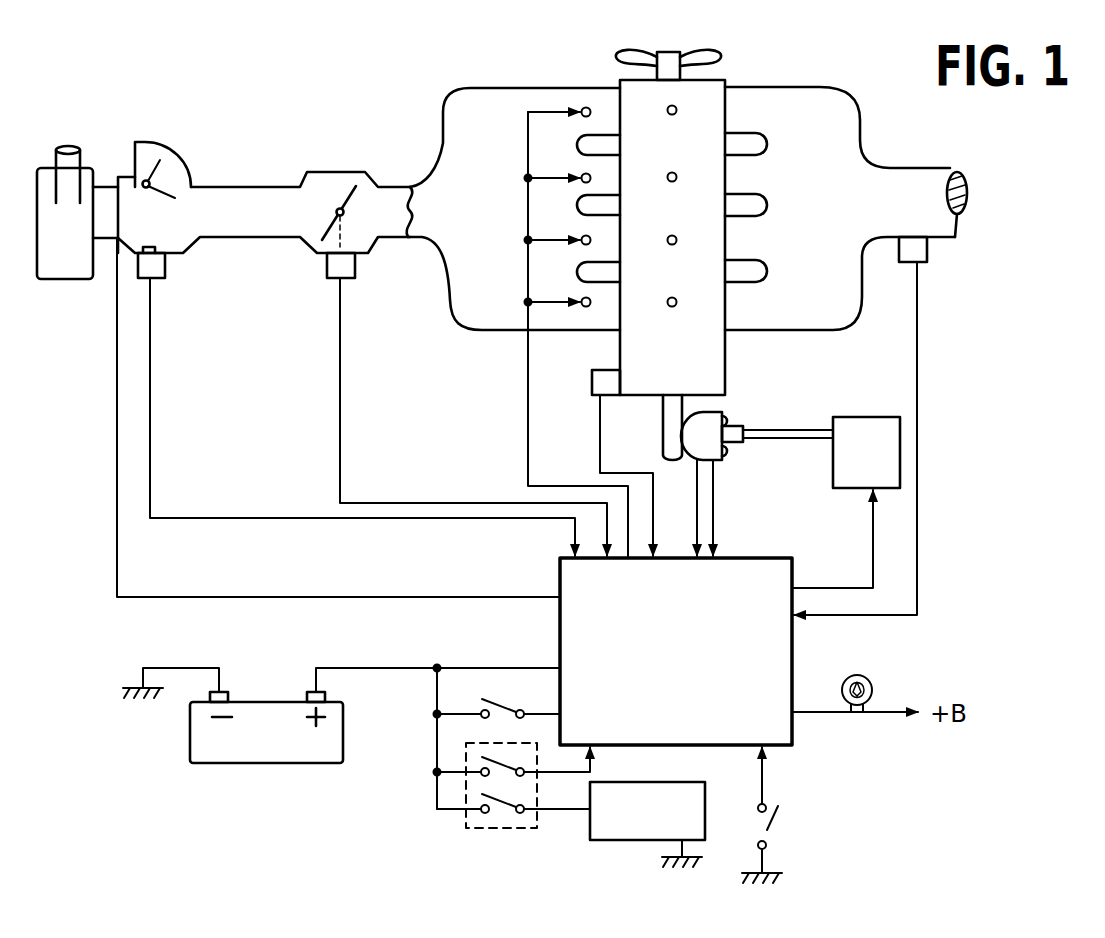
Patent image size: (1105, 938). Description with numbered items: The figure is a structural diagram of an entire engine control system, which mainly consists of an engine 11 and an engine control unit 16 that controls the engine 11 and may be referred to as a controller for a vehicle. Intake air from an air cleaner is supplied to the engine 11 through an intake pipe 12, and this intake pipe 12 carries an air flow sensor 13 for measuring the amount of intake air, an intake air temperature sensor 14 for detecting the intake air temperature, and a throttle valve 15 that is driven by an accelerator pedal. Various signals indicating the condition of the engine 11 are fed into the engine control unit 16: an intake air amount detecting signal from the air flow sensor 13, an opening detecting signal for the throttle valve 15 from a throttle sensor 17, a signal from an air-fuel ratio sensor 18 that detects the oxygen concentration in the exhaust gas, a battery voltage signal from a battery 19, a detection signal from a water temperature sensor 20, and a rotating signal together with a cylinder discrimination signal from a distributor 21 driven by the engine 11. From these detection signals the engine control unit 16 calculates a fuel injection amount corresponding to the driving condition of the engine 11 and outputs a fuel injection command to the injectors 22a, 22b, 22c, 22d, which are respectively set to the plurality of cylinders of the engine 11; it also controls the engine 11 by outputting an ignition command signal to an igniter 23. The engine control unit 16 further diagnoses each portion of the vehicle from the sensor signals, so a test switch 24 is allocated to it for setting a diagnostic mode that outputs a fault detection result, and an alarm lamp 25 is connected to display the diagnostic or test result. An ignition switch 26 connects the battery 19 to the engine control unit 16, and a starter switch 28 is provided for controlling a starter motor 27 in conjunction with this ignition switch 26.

The engine 11 is at (710, 97).
The intake pipe 12 is at (220, 187).
The air flow sensor 13 is at (140, 181).
The intake air temperature sensor 14 is at (165, 262).
The throttle valve 15 is at (340, 186).
The engine control unit 16 is at (795, 727).
The throttle sensor 17 is at (355, 262).
The air-fuel ratio sensor 18 is at (927, 250).
The battery 19 is at (310, 763).
The water temperature sensor 20 is at (592, 380).
The distributor 21 is at (724, 417).
The injector 22a is at (585, 107).
The injector 22b is at (584, 175).
The injector 22c is at (583, 243).
The injector 22d is at (585, 307).
The igniter 23 is at (873, 417).
The test switch 24 is at (780, 823).
The alarm lamp 25 is at (870, 680).
The ignition switch 26 is at (510, 699).
The starter motor 27 is at (632, 845).
The starter switch 28 is at (500, 830).